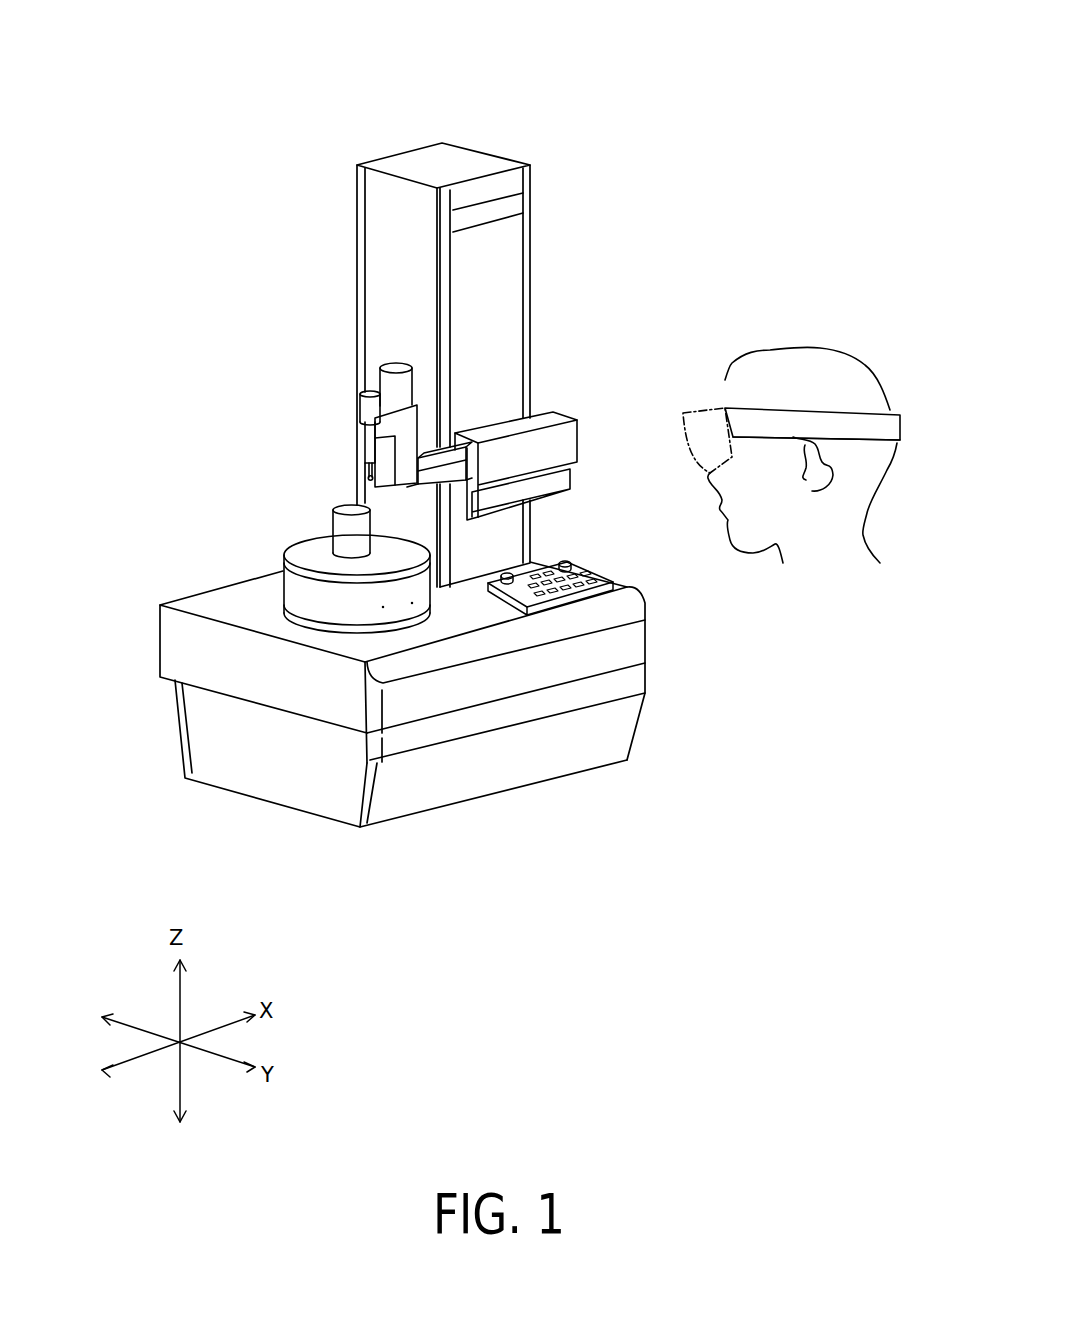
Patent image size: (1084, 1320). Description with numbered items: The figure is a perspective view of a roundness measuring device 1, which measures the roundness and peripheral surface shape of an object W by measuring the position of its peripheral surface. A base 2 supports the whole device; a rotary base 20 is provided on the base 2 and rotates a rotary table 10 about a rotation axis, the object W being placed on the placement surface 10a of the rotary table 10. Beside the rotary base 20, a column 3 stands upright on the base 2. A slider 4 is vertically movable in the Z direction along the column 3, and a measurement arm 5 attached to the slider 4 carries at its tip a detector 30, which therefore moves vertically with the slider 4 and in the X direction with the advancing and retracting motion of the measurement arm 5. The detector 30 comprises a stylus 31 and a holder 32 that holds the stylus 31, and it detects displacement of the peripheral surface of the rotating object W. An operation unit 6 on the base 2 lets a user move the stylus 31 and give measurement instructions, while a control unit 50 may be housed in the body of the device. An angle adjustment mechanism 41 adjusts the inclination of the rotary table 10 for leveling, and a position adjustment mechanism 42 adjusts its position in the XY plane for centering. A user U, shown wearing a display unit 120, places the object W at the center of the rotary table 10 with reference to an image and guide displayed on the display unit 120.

The roundness measuring device 1 is at (572, 93).
The base 2 is at (370, 694).
The column 3 is at (502, 247).
The slider 4 is at (560, 447).
The measurement arm 5 is at (438, 470).
The operation unit 6 is at (587, 577).
The rotary table 10 is at (290, 676).
The placement surface 10a is at (307, 553).
The rotary base 20 is at (317, 613).
The detector 30 is at (326, 425).
The stylus 31 is at (367, 476).
The holder 32 is at (360, 452).
The angle adjustment mechanism 41 is at (383, 607).
The position adjustment mechanism 42 is at (412, 603).
The control unit 50 is at (567, 668).
The display unit 120 is at (703, 413).
The object W is at (343, 522).
The user U is at (857, 348).